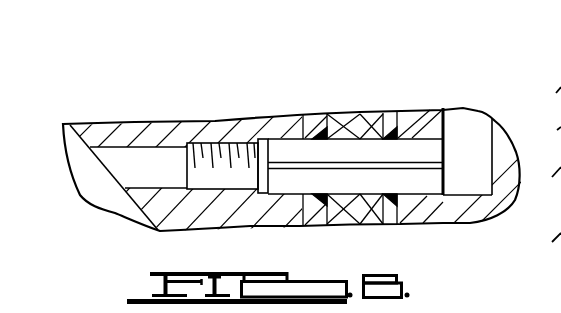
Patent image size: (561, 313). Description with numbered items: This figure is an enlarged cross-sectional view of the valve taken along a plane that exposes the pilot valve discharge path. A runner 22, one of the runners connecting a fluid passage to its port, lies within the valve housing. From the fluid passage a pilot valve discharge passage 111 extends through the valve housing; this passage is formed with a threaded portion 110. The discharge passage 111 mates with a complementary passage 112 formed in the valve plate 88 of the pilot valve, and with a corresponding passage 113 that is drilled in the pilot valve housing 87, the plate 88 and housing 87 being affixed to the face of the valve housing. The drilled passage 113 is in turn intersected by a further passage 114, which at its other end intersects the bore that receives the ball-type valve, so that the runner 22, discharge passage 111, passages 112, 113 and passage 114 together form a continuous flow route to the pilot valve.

The runner 22 is at (124, 212).
The pilot valve housing 87 is at (413, 118).
The valve plate 88 is at (343, 124).
The threaded portion 110 is at (228, 143).
The pilot valve discharge passage 111 is at (167, 190).
The complementary passage 112 is at (352, 195).
The corresponding passage 113 is at (426, 195).
The passage 114 is at (480, 126).